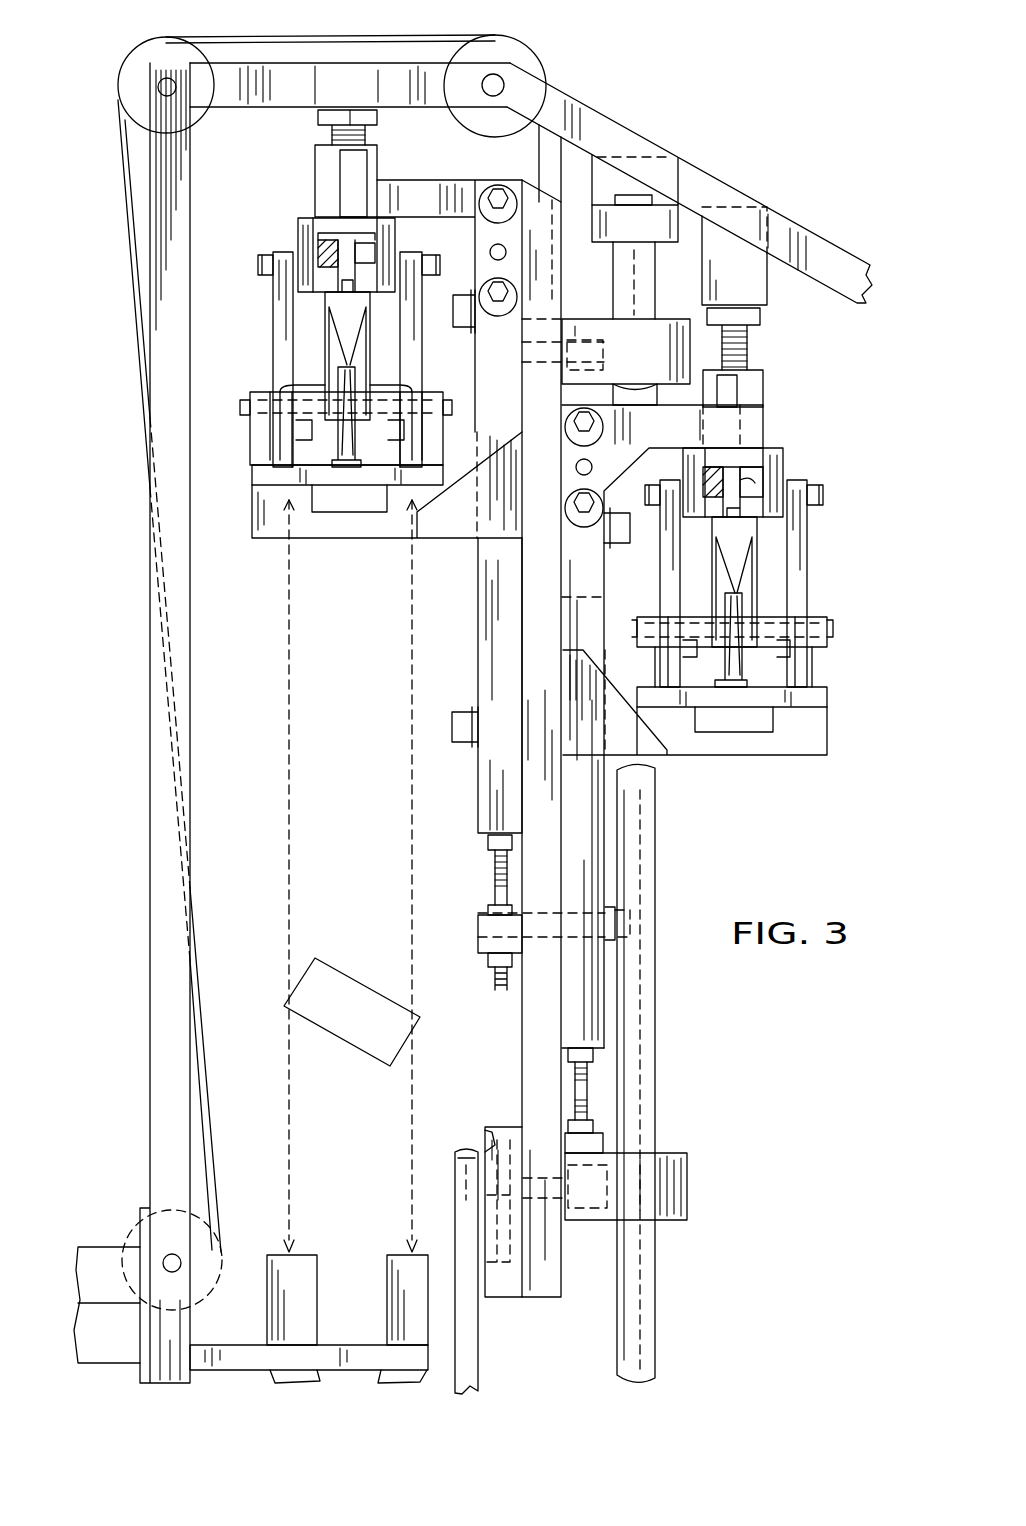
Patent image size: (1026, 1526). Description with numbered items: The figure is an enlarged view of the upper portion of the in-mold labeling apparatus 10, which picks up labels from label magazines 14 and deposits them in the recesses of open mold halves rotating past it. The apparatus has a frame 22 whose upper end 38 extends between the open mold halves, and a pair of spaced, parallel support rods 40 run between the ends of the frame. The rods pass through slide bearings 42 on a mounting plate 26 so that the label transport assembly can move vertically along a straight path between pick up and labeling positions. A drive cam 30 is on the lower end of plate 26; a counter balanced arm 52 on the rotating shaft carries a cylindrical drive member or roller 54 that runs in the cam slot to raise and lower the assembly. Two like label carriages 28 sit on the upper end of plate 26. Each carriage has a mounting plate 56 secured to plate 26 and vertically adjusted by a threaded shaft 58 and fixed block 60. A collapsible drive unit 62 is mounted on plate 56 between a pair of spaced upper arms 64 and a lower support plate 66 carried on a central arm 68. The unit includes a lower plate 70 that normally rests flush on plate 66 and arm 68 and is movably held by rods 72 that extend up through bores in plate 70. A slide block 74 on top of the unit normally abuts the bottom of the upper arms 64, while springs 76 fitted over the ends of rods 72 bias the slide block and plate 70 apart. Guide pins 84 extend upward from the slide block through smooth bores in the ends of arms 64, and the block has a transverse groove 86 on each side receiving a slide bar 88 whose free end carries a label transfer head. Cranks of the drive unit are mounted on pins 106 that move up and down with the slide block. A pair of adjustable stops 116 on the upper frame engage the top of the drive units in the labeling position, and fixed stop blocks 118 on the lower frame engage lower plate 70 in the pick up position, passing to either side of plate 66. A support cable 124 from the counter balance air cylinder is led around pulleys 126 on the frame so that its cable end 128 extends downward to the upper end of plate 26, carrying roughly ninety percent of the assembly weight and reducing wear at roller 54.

The in-mold labeling apparatus 10 is at (762, 92).
The label magazine 14 is at (342, 1039).
The frame 22 is at (149, 787).
The mounting plate 26 is at (528, 1042).
The label carriage 28 is at (257, 556).
The drive cam 30 is at (502, 1287).
The upper end of frame 38 is at (281, 65).
The support rod 40 is at (648, 1275).
The slide bearing 42 is at (665, 328).
The counter balanced arm 52 is at (470, 1358).
The drive member or roller 54 is at (481, 1131).
The mounting plate 56 is at (575, 850).
The threaded shaft 58 is at (583, 1088).
The fixed block 60 is at (597, 1143).
The collapsible drive unit 62 is at (270, 312).
The upper arm 64 is at (389, 211).
The lower support plate 66 is at (373, 502).
The central arm 68 is at (345, 530).
The lower plate 70 is at (822, 693).
The rod 72 is at (740, 601).
The slide block 74 is at (743, 458).
The spring 76 is at (748, 567).
The guide pin 84 is at (735, 390).
The transverse groove 86 is at (742, 498).
The slide bar 88 is at (720, 486).
The pin 106 is at (290, 388).
The stop 116 is at (372, 160).
The fixed stop block 118 is at (386, 1297).
The support cable 124 is at (128, 208).
The pulley 126 is at (137, 52).
The cable end 128 is at (537, 155).